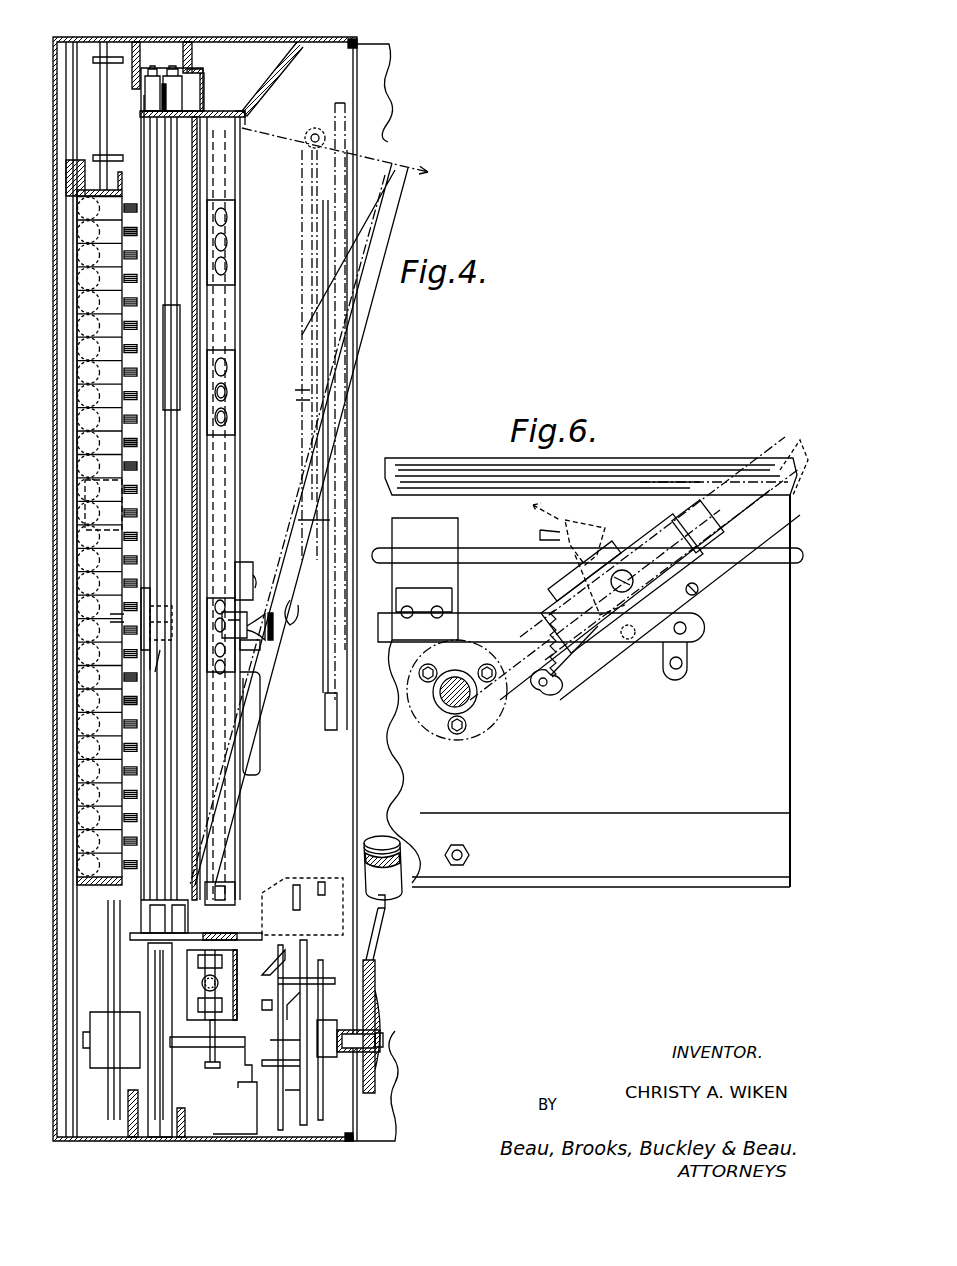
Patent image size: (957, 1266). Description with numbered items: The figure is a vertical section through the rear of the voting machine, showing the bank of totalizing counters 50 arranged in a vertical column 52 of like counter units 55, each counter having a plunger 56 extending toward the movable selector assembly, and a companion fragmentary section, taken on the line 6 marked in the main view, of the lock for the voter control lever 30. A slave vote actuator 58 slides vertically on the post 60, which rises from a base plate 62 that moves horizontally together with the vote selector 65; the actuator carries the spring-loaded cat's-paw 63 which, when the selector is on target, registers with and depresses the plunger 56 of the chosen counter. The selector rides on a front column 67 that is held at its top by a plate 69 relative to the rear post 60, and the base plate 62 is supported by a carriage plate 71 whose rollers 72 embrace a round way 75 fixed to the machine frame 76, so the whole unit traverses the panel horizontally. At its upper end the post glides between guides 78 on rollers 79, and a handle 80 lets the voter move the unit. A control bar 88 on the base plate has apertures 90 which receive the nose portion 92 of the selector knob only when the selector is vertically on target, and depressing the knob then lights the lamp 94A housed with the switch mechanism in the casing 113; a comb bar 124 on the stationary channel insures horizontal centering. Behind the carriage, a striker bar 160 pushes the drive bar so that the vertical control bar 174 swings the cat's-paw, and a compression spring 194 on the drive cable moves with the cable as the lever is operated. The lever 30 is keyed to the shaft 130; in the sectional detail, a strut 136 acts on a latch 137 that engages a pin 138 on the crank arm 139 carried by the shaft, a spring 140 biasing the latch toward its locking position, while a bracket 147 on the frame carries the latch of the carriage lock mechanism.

In FIG. 4, the bank of totalizing counters 50 is at (52, 345).
In FIG. 4, the column of counters 52 is at (77, 754).
In FIG. 4, the counter unit 55 is at (103, 472).
In FIG. 4, the plunger 56 is at (127, 243).
In FIG. 4, the slave vote actuator 58 is at (150, 630).
In FIG. 4, the post 60 is at (141, 130).
In FIG. 4, the base plate 62 is at (141, 940).
In FIG. 4, the push pad (cat's-paw) 63 is at (124, 616).
In FIG. 4, the vote selector 65 is at (258, 626).
In FIG. 4, the front column 67 is at (236, 302).
In FIG. 4, the plate 69 is at (195, 117).
In FIG. 4, the carriage plate 71 is at (172, 1020).
In FIG. 4, the rollers 72 is at (200, 962).
In FIG. 4, the round way 75 is at (202, 985).
In FIG. 4, the machine frame 76 is at (218, 1047).
In FIG. 4, the guides 78 is at (172, 69).
In FIG. 4, the rollers 79 is at (150, 69).
In FIG. 4, the handle 80 is at (260, 742).
In FIG. 4, the control bar 88 is at (227, 388).
In FIG. 4, the apertures 90 is at (228, 417).
In FIG. 4, the nose portion 92 is at (237, 648).
In FIG. 4, the light 94A is at (257, 583).
In FIG. 4, the casing 113 is at (240, 562).
In FIG. 4, the comb bar 124 is at (234, 900).
In FIG. 4, the lever shaft 130 is at (258, 1040).
In FIG. 6, the strut 136 is at (587, 672).
In FIG. 6, the latch 137 is at (540, 530).
In FIG. 6, the pin 138 is at (596, 604).
In FIG. 6, the crank arm 139 is at (745, 424).
In FIG. 6, the spring 140 is at (580, 674).
In FIG. 4, the bracket 147 is at (252, 1095).
In FIG. 4, the striker bar 160 is at (265, 885).
In FIG. 4, the control bar 174 is at (142, 165).
In FIG. 4, the compression spring 194 is at (155, 658).
In FIG. 4, the voter control lever 30 is at (396, 895).
In FIG. 6, the voter control lever 30 is at (765, 445).
In FIG. 4, the section line 6 is at (278, 911).